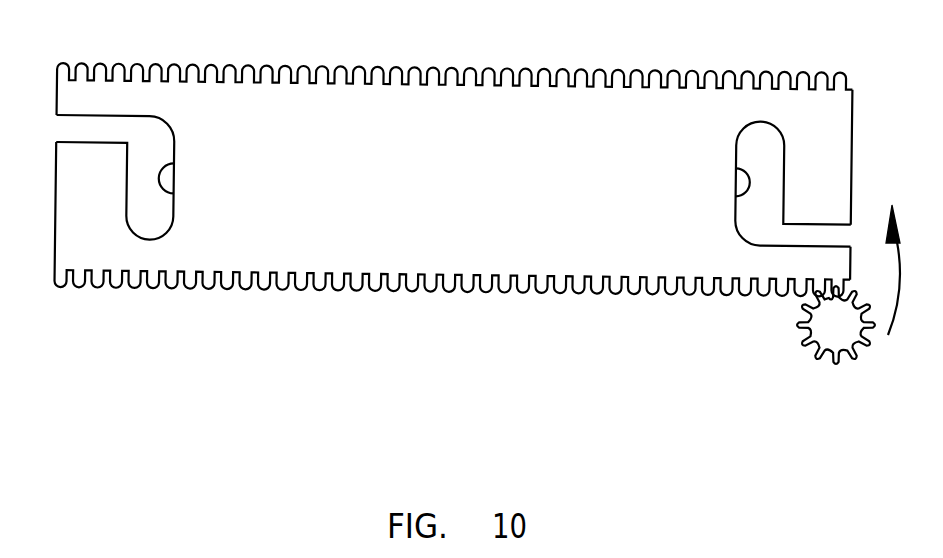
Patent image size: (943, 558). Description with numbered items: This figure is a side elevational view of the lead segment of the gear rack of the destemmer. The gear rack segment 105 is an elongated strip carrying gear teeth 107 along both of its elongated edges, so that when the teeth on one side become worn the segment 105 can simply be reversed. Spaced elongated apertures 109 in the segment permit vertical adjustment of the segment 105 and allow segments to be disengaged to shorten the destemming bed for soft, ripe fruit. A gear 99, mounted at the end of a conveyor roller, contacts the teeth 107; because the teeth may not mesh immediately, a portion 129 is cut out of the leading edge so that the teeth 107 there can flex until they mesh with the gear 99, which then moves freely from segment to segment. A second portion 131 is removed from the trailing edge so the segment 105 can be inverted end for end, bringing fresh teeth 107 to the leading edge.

The gear 99 is at (798, 325).
The gear rack segment 105 is at (317, 175).
The gear teeth 107 is at (332, 67).
The elongated apertures 109 is at (172, 191).
The cut-out portion 129 is at (797, 240).
The second removed portion 131 is at (113, 128).